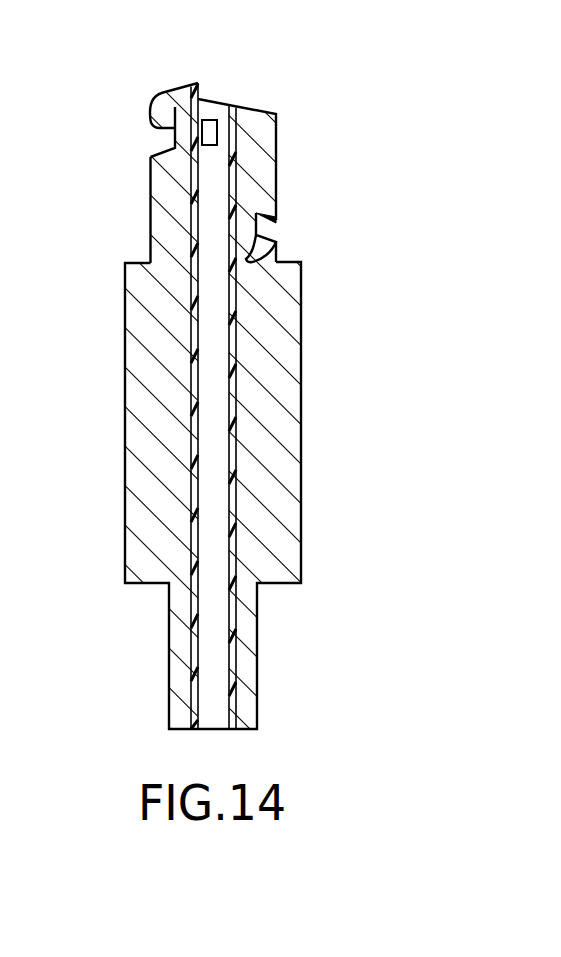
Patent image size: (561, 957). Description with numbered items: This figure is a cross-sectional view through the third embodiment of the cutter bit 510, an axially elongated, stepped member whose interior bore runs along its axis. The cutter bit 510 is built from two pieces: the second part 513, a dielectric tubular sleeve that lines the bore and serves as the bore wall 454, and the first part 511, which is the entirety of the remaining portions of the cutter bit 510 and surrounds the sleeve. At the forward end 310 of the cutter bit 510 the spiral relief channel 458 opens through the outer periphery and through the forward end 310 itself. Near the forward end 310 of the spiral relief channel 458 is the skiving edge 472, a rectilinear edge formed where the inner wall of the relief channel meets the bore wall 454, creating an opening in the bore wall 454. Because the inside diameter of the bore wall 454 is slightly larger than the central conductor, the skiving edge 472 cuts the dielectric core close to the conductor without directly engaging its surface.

The forward end 310 is at (261, 84).
The spiral relief channel 458 is at (147, 138).
The skiving edge 472 is at (217, 132).
The cutter bit 510 is at (371, 204).
The first part 511 is at (281, 296).
The second part 513 is at (232, 357).
The bore wall 454 is at (213, 439).